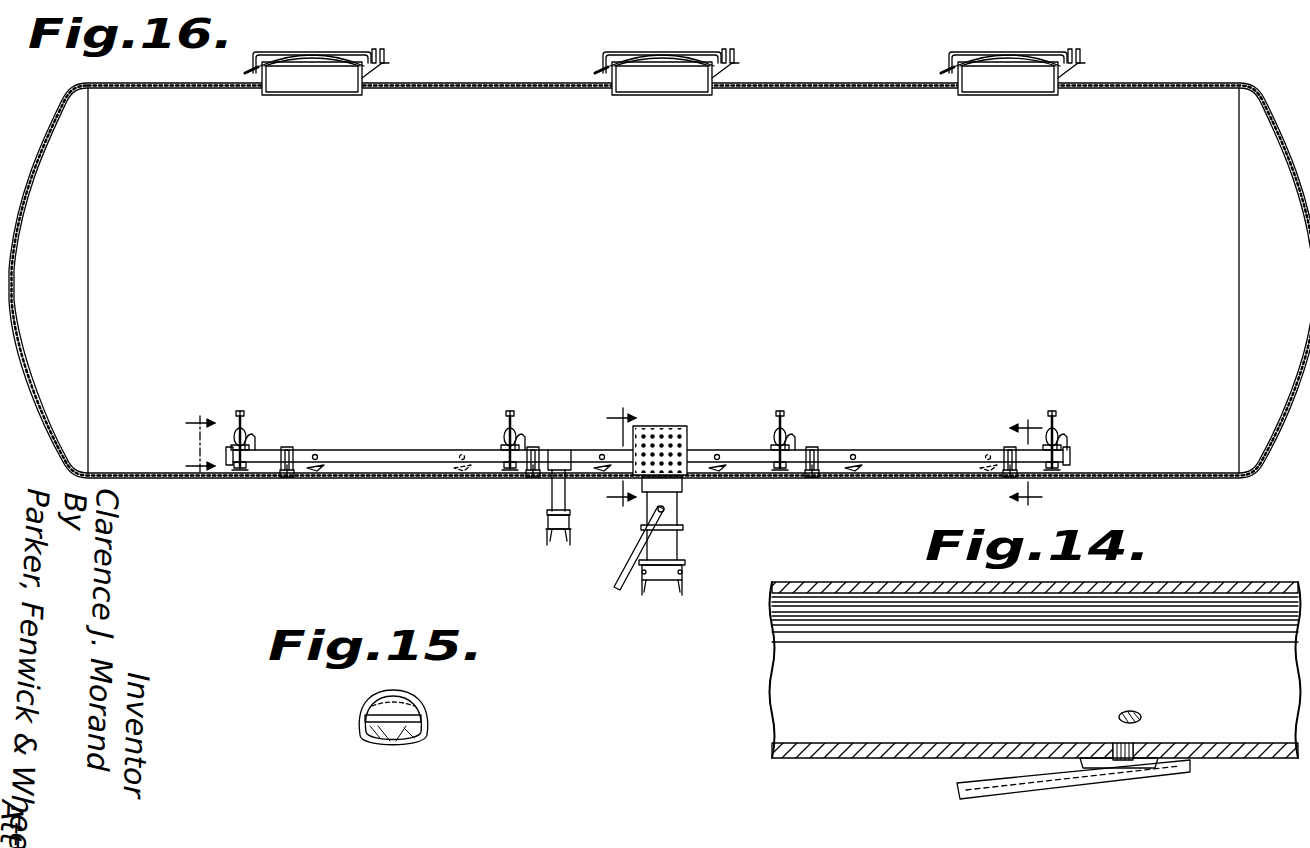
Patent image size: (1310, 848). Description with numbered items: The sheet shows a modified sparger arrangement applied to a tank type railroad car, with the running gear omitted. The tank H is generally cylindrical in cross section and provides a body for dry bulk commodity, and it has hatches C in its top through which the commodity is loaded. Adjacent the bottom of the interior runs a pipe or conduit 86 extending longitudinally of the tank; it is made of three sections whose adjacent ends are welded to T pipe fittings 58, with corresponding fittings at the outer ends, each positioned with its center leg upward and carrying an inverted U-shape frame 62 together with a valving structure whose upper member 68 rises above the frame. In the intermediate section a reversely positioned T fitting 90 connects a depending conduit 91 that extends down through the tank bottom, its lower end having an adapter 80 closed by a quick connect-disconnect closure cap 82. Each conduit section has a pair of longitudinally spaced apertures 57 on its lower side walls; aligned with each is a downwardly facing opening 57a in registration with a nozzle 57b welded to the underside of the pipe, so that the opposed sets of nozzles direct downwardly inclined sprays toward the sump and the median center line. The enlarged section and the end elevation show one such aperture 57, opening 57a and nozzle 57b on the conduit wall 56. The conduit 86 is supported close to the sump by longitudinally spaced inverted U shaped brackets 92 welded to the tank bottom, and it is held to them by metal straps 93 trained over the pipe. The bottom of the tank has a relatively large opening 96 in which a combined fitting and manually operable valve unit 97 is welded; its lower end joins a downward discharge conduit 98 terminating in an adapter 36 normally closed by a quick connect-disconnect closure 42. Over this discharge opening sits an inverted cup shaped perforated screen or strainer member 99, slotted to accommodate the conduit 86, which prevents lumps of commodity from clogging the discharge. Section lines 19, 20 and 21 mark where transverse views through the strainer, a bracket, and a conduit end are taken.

In FIG. 16, the tank H is at (1141, 82).
In FIG. 16, the hatches C is at (350, 57).
In FIG. 16, the pipe or conduit 86 is at (368, 451).
In FIG. 16, the section line 21— 21 is at (185, 442).
In FIG. 16, the section line 19— 19 is at (622, 455).
In FIG. 16, the section line 20— 20 is at (1024, 459).
In FIG. 16, the inverted U-shape frame 62 is at (240, 426).
In FIG. 16, the valve handle 68 is at (245, 447).
In FIG. 16, the T pipe fitting 58 is at (252, 447).
In FIG. 16, the metal straps 93 is at (289, 452).
In FIG. 16, the inverted U shaped brackets 92 is at (285, 479).
In FIG. 16, the apertures 57 is at (316, 456).
In FIG. 14, the apertures 57 is at (1140, 713).
In FIG. 14, the downwardly facing opening 57a is at (1135, 750).
In FIG. 16, the nozzle 57b is at (322, 470).
In FIG. 15, the nozzle 57b is at (420, 706).
In FIG. 14, the nozzle 57b is at (1044, 778).
In FIG. 16, the reversely positioned T fitting 90 is at (559, 451).
In FIG. 16, the depending conduit 91 is at (551, 496).
In FIG. 16, the adapter 80 is at (546, 517).
In FIG. 16, the quick connect-disconnect closure cap 82 is at (556, 535).
In FIG. 16, the screen or strainer member 99 is at (681, 427).
In FIG. 16, the opening 96 is at (682, 483).
In FIG. 16, the combined fitting and manually operable valve unit 97 is at (684, 512).
In FIG. 16, the discharge conduit 98 is at (685, 547).
In FIG. 16, the adapter 36 is at (617, 590).
In FIG. 16, the quick connect-disconnect closure 42 is at (661, 583).
In FIG. 14, the pipe wall 56 is at (828, 760).